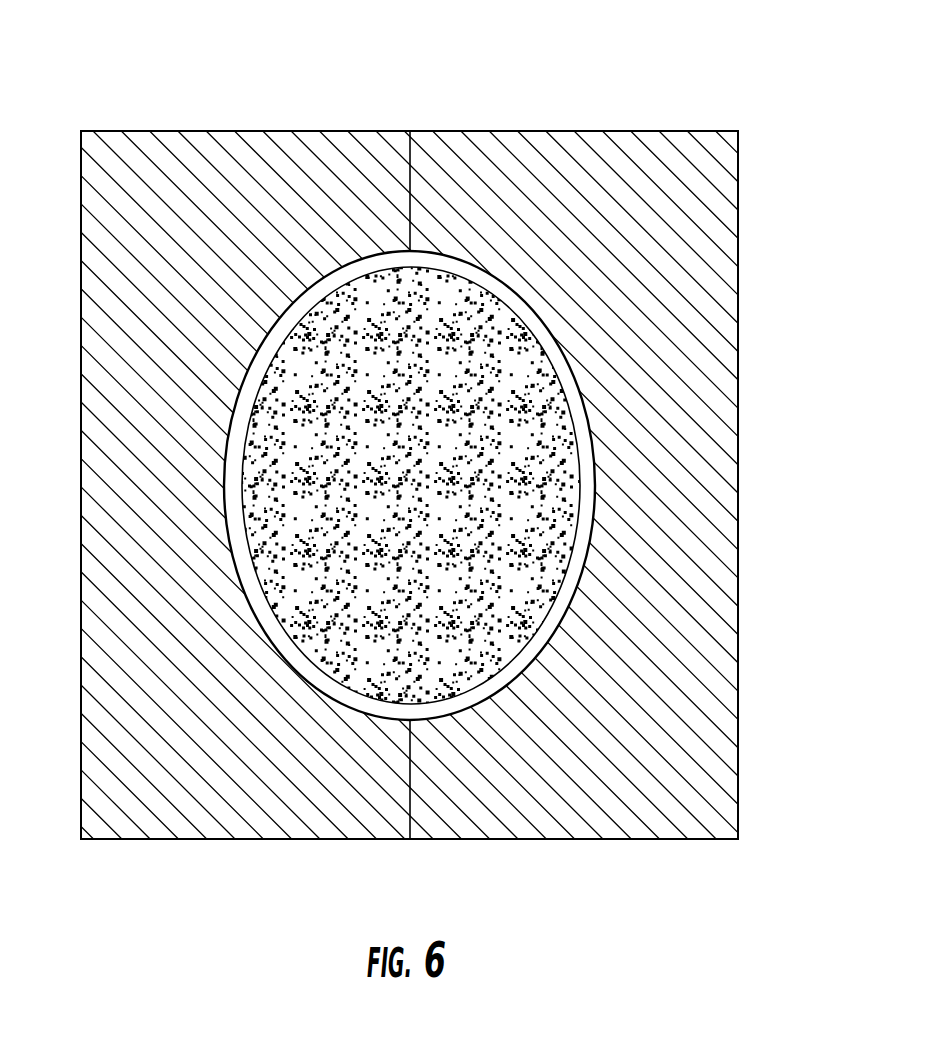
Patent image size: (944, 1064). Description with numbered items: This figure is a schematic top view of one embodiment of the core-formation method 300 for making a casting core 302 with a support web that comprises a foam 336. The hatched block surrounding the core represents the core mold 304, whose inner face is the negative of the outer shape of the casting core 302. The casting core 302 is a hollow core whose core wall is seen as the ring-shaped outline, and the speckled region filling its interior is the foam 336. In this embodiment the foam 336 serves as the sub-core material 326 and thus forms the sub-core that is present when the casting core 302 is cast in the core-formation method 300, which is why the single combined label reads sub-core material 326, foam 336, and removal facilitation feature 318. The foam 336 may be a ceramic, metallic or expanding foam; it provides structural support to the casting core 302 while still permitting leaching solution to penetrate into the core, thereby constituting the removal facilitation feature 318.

The core-formation method 300 is at (121, 48).
The casting core 302 is at (452, 265).
The core mold 304 is at (700, 142).
The sub-core material 326 is at (374, 640).
The foam 336 is at (411, 485).
The removal facilitation feature 318 is at (411, 485).